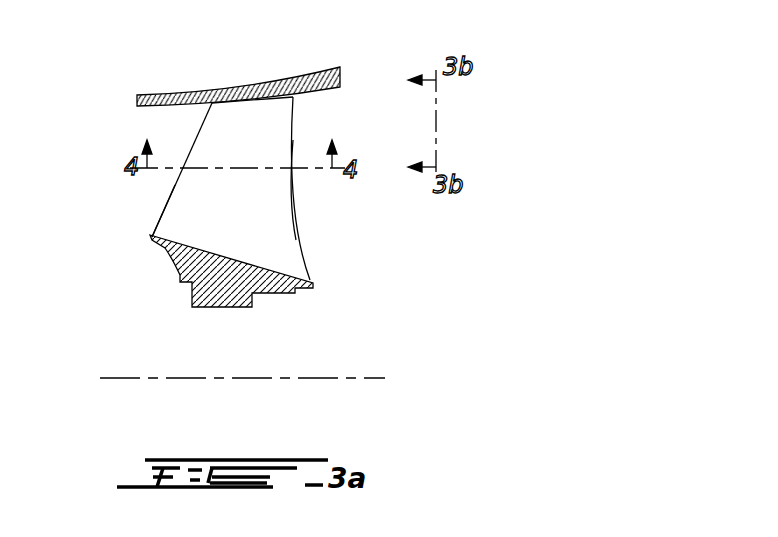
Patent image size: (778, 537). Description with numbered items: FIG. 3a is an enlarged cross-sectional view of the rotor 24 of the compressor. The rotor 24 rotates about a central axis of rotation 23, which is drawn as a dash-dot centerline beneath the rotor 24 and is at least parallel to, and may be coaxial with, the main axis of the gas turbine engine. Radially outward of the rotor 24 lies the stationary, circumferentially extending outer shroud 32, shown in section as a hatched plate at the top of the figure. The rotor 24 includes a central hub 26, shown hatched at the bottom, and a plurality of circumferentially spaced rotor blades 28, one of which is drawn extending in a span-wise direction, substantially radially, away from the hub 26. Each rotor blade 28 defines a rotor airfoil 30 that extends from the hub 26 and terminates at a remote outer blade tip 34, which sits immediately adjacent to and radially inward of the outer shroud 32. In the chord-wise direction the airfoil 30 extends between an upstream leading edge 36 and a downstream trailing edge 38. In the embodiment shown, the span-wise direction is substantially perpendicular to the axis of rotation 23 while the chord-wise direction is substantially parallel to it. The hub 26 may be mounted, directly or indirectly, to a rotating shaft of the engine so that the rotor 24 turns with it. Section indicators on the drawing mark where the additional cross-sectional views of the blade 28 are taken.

The axis of rotation 23 is at (333, 378).
The rotor 24 is at (277, 97).
The hub 26 is at (225, 283).
The rotor blade 28 is at (279, 240).
The rotor airfoil 30 is at (218, 188).
The outer shroud 32 is at (145, 93).
The blade tip 34 is at (252, 118).
The leading edge 36 is at (293, 190).
The trailing edge 38 is at (158, 220).